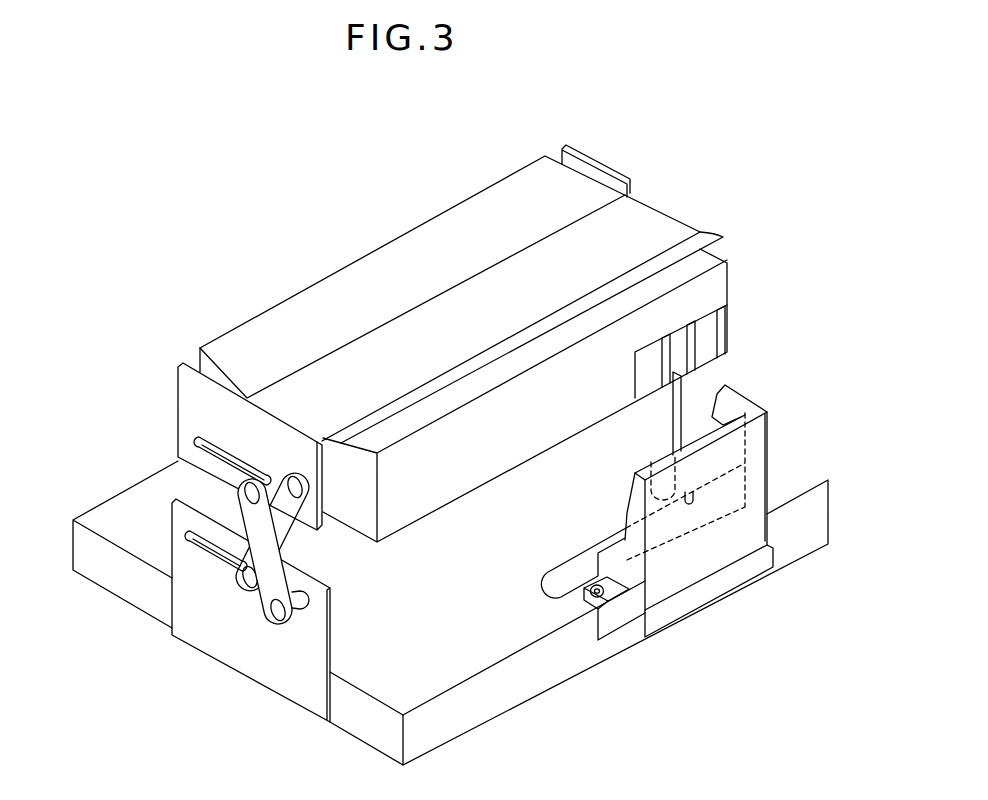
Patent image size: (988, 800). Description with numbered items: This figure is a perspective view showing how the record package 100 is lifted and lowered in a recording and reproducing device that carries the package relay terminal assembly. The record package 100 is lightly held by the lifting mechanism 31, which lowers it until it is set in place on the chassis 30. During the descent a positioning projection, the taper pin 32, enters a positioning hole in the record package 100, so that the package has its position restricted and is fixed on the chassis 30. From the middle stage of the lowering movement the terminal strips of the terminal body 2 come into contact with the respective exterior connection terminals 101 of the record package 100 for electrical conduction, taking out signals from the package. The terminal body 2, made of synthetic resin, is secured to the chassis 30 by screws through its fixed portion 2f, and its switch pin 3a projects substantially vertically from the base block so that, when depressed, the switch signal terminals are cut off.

The record package 100 is at (572, 187).
The exterior connection terminals 101 is at (705, 335).
The taper pin 32 is at (661, 470).
The switch pin 3a is at (690, 495).
The lifting mechanism 31 is at (260, 557).
The chassis 30 is at (487, 647).
The terminal body 2 is at (637, 592).
The fixed portion 2f is at (613, 603).